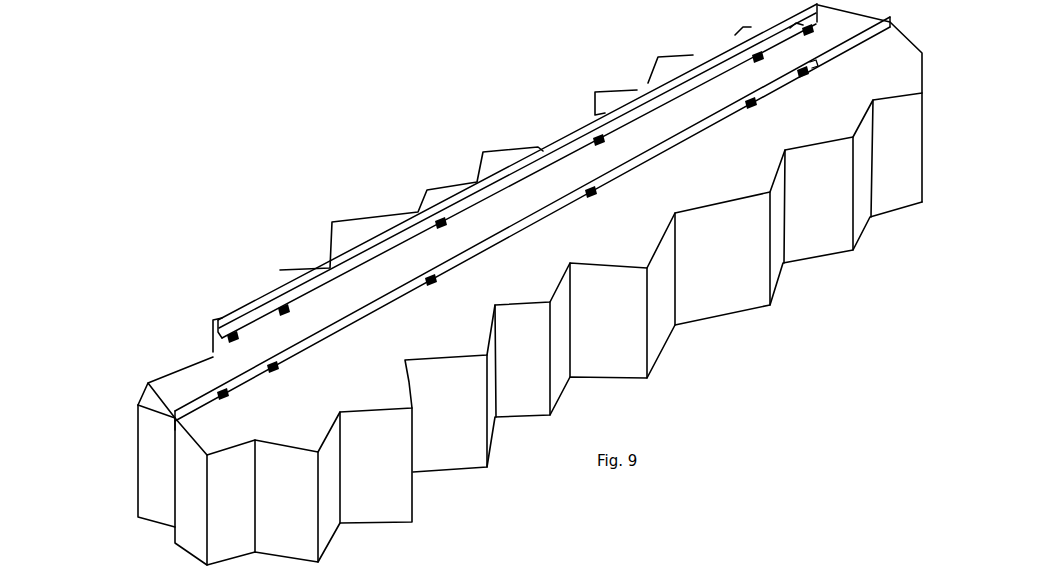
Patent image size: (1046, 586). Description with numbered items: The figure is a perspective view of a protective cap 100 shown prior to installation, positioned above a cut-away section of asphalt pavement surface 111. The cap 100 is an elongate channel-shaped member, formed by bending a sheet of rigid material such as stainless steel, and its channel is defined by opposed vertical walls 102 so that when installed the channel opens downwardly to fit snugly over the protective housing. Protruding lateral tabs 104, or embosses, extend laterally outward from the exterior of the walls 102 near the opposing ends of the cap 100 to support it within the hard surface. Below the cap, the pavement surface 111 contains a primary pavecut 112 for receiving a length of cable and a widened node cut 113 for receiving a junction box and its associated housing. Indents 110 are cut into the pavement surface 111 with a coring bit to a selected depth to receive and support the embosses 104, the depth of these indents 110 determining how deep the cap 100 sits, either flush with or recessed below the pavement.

The protective cap 100 is at (511, 173).
The opposed vertical walls 102 is at (519, 199).
The lateral tabs 104 is at (506, 170).
The indents 110 is at (513, 223).
The pavement surface 111 is at (486, 285).
The primary pavecut 112 is at (146, 387).
The node cut 113 is at (512, 214).